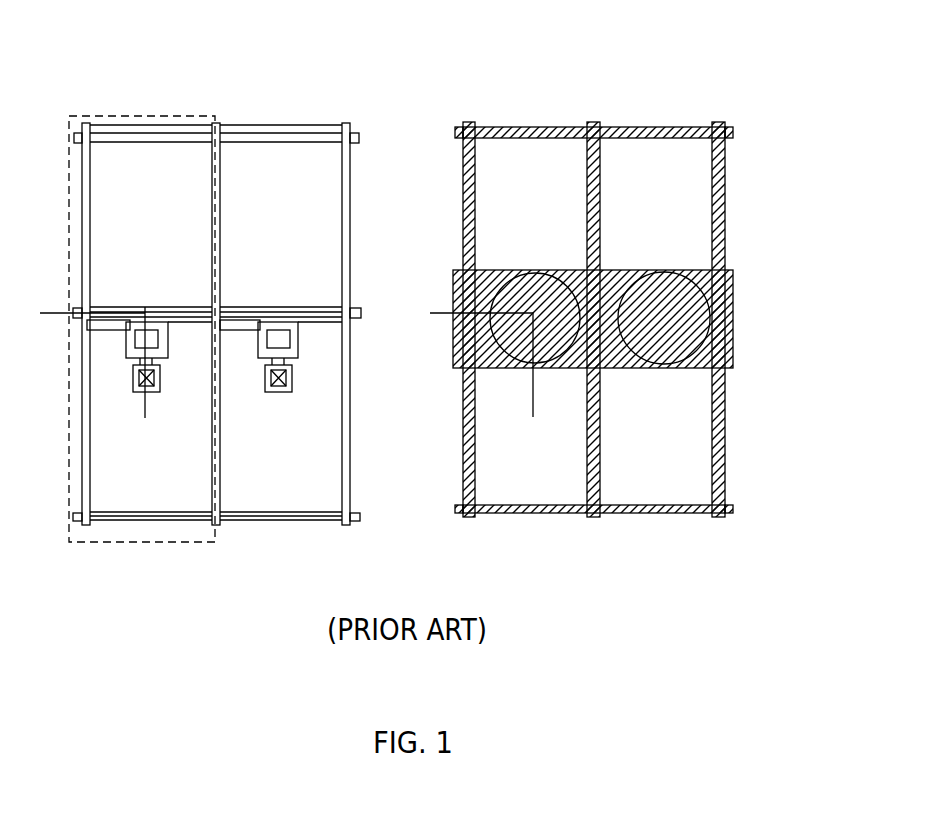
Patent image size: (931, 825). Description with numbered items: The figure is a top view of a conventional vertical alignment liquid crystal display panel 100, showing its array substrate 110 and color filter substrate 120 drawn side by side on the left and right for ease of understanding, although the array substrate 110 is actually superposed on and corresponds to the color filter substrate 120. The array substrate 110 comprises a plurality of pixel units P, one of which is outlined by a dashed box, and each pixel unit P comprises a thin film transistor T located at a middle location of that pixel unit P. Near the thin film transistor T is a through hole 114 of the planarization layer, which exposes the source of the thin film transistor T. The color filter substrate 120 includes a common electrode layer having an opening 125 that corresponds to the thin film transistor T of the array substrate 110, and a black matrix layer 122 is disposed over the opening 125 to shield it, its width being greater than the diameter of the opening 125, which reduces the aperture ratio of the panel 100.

The vertical alignment liquid crystal display panel 100 is at (103, 29).
The array substrate 110 is at (270, 123).
The through hole 114 is at (155, 377).
The color filter substrate 120 is at (523, 125).
The black matrix layer 122 is at (735, 300).
The opening 125 is at (503, 280).
The pixel unit P is at (97, 118).
The thin film transistor T is at (165, 330).